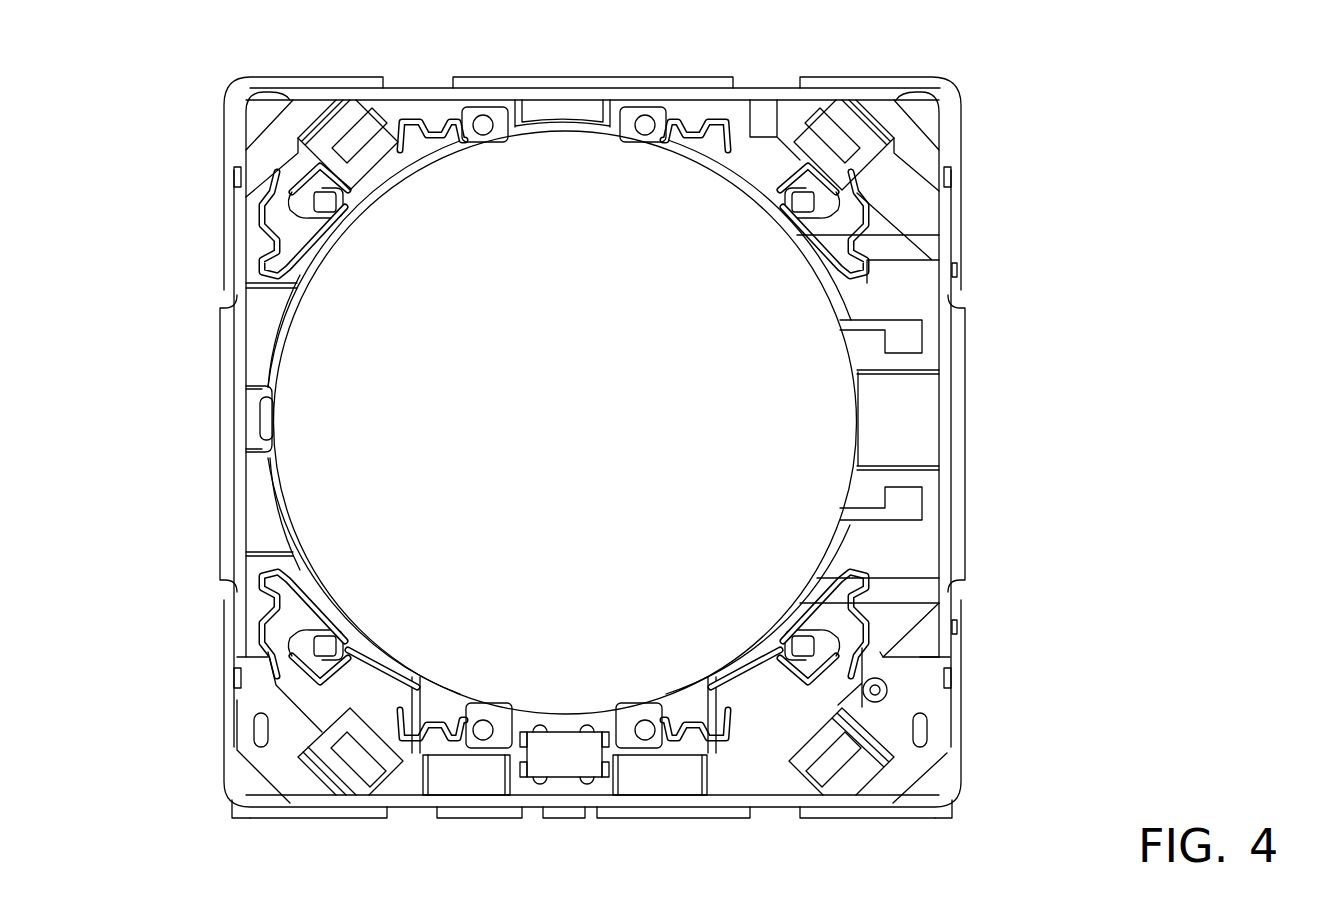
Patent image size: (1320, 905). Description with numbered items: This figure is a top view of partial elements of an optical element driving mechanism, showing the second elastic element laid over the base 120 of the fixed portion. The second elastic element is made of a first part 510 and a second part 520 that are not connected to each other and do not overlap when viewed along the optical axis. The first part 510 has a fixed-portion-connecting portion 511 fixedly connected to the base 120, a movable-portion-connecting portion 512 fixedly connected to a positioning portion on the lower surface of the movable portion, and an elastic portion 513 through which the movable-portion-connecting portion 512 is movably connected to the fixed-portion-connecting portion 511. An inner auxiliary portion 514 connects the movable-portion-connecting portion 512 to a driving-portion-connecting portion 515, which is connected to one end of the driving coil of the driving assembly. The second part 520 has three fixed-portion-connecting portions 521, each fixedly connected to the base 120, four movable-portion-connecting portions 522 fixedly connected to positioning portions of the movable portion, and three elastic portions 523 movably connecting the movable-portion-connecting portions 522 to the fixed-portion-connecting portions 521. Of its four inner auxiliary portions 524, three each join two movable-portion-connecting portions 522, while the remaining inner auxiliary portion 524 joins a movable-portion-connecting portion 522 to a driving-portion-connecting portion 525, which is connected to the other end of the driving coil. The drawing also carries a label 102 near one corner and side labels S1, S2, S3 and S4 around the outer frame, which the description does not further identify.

The first corner portion 102 is at (268, 92).
The base 120 is at (930, 88).
The first part 510 is at (958, 736).
The fixed-portion-connecting portion 511 is at (903, 688).
The movable-portion-connecting portion 512 is at (658, 733).
The elastic portion 513 is at (865, 573).
The inner auxiliary portion 514 is at (775, 625).
The driving-portion-connecting portion 515 is at (903, 503).
The second part 520 is at (227, 736).
The fixed-portion-connecting portion 521 is at (283, 149).
The movable-portion-connecting portion 522 is at (467, 117).
The elastic portion 523 is at (275, 250).
The inner auxiliary portion 524 is at (357, 215).
The driving-portion-connecting portion 525 is at (903, 333).
The first side S1 is at (968, 545).
The second side S2 is at (652, 818).
The third side S3 is at (222, 543).
The fourth side S4 is at (650, 77).